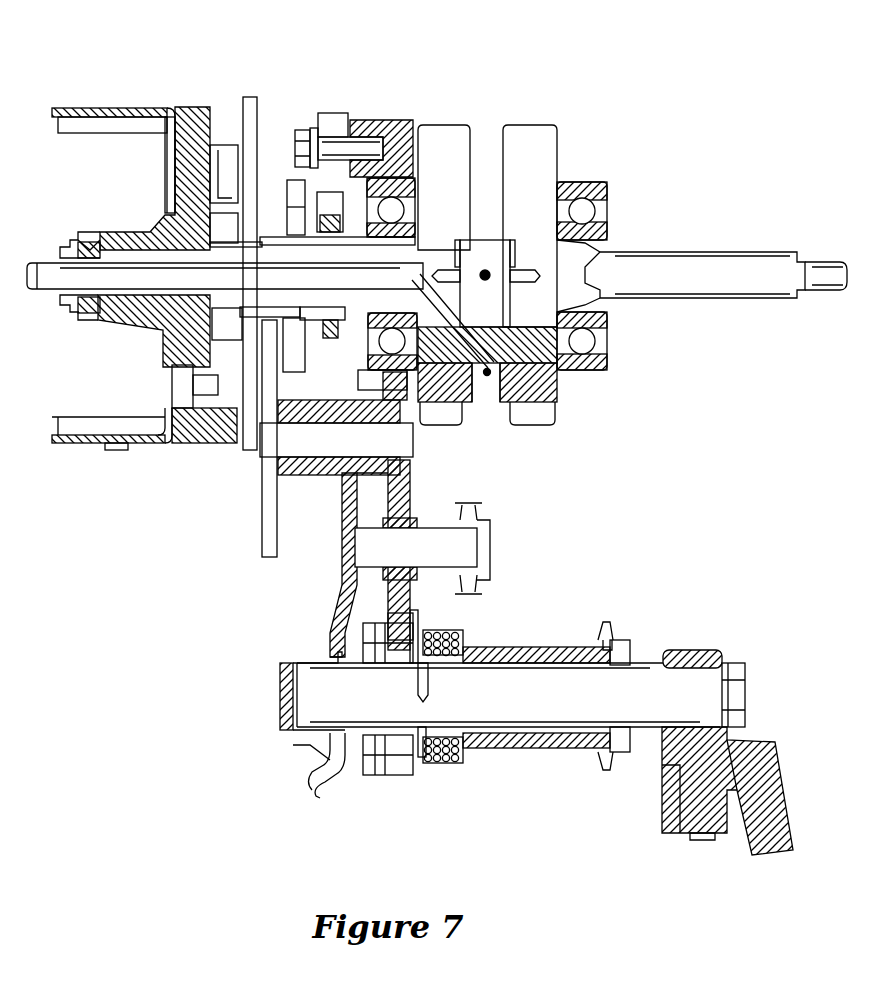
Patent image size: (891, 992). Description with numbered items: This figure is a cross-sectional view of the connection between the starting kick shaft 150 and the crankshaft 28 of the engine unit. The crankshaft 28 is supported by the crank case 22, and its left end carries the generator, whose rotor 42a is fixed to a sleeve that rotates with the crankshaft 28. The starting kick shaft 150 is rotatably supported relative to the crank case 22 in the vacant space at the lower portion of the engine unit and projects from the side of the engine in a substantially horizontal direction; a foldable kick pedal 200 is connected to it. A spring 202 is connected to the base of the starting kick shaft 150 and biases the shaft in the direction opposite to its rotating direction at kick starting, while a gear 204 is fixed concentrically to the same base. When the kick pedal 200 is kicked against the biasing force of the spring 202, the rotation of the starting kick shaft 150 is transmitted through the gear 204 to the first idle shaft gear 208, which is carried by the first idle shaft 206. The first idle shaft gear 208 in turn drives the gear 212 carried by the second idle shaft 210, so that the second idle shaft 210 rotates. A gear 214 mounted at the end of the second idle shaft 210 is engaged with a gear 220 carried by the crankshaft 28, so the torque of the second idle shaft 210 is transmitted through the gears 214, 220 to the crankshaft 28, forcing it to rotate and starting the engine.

The crank case 22 is at (352, 495).
The crankshaft 28 is at (135, 258).
The rotor 42a is at (78, 447).
The starting kick shaft 150 is at (647, 672).
The foldable kick pedal 200 is at (787, 792).
The spring 202 is at (462, 638).
The gear 204 is at (397, 773).
The first idle shaft 206 is at (460, 538).
The first idle shaft gear 208 is at (407, 498).
The second idle shaft 210 is at (299, 439).
The gear 212 is at (398, 414).
The gear 214 is at (262, 534).
The gear 220 is at (271, 216).